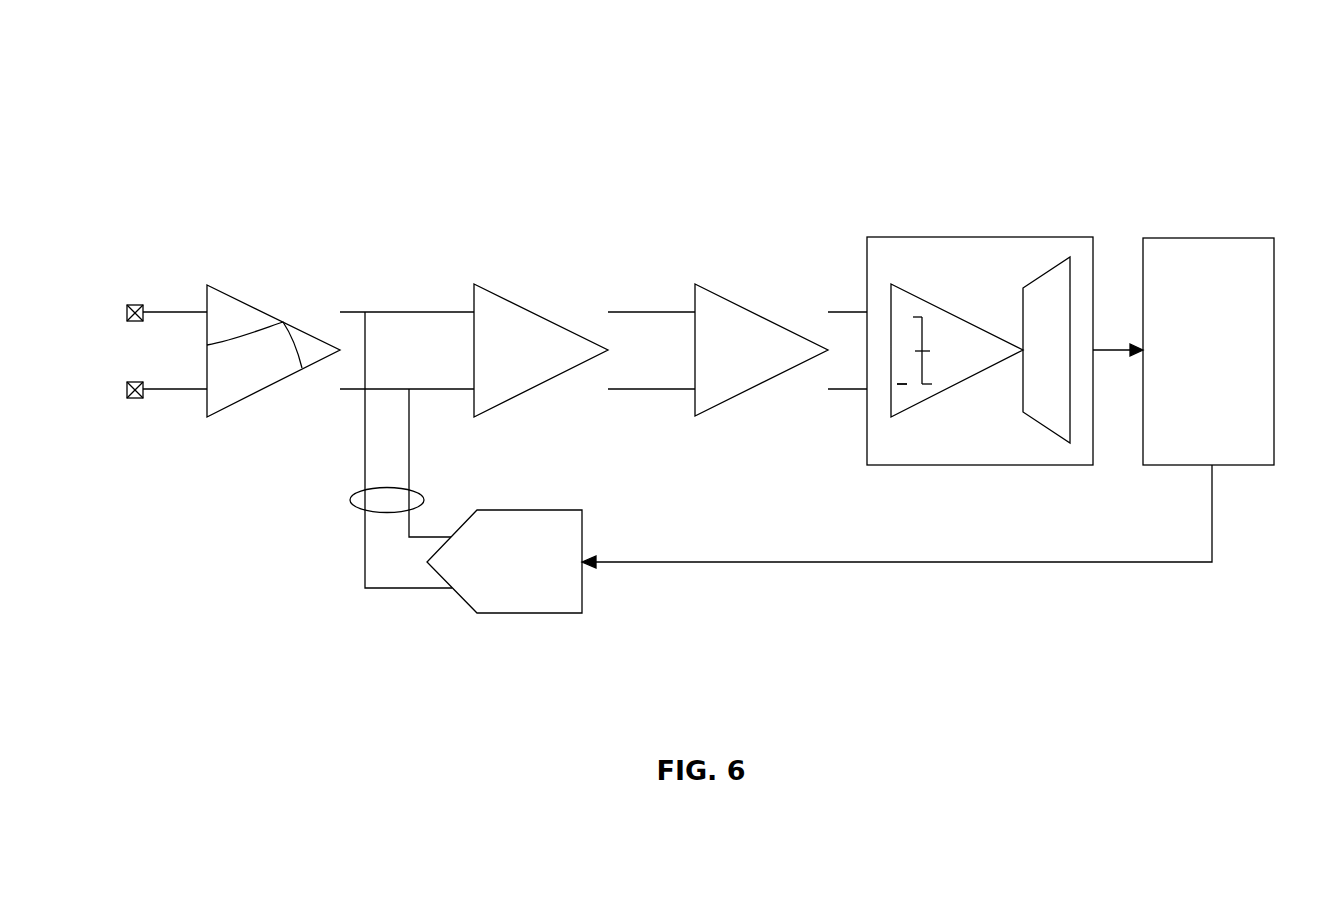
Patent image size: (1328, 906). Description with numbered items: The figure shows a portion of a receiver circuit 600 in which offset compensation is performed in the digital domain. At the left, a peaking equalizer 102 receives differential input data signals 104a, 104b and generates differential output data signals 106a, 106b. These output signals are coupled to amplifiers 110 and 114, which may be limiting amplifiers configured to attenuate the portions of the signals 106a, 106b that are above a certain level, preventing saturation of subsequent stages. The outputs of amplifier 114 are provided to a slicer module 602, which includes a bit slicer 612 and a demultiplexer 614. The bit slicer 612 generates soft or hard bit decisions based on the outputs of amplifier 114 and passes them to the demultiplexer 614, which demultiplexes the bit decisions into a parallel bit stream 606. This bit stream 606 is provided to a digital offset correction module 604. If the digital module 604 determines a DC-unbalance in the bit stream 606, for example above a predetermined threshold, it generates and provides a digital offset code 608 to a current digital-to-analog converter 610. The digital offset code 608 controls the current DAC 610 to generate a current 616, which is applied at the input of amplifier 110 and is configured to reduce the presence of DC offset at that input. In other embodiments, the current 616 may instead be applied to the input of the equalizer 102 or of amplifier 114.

The receiver circuit 600 is at (1203, 101).
The peaking equalizer 102 is at (238, 298).
The differential input data signal 104a is at (165, 311).
The differential input data signal 104b is at (163, 388).
The differential output data signal 106a is at (392, 311).
The differential output data signal 106b is at (323, 392).
The amplifier 110 is at (507, 302).
The amplifier 114 is at (727, 300).
The slicer module 602 is at (980, 339).
The digital offset correction module 604 is at (1208, 238).
The parallel bit stream 606 is at (1118, 354).
The digital offset code 608 is at (965, 565).
The current digital-to-analog converter (DAC) 610 is at (523, 510).
The bit slicer 612 is at (969, 380).
The demultiplexer 614 is at (1046, 350).
The current 616 is at (359, 510).